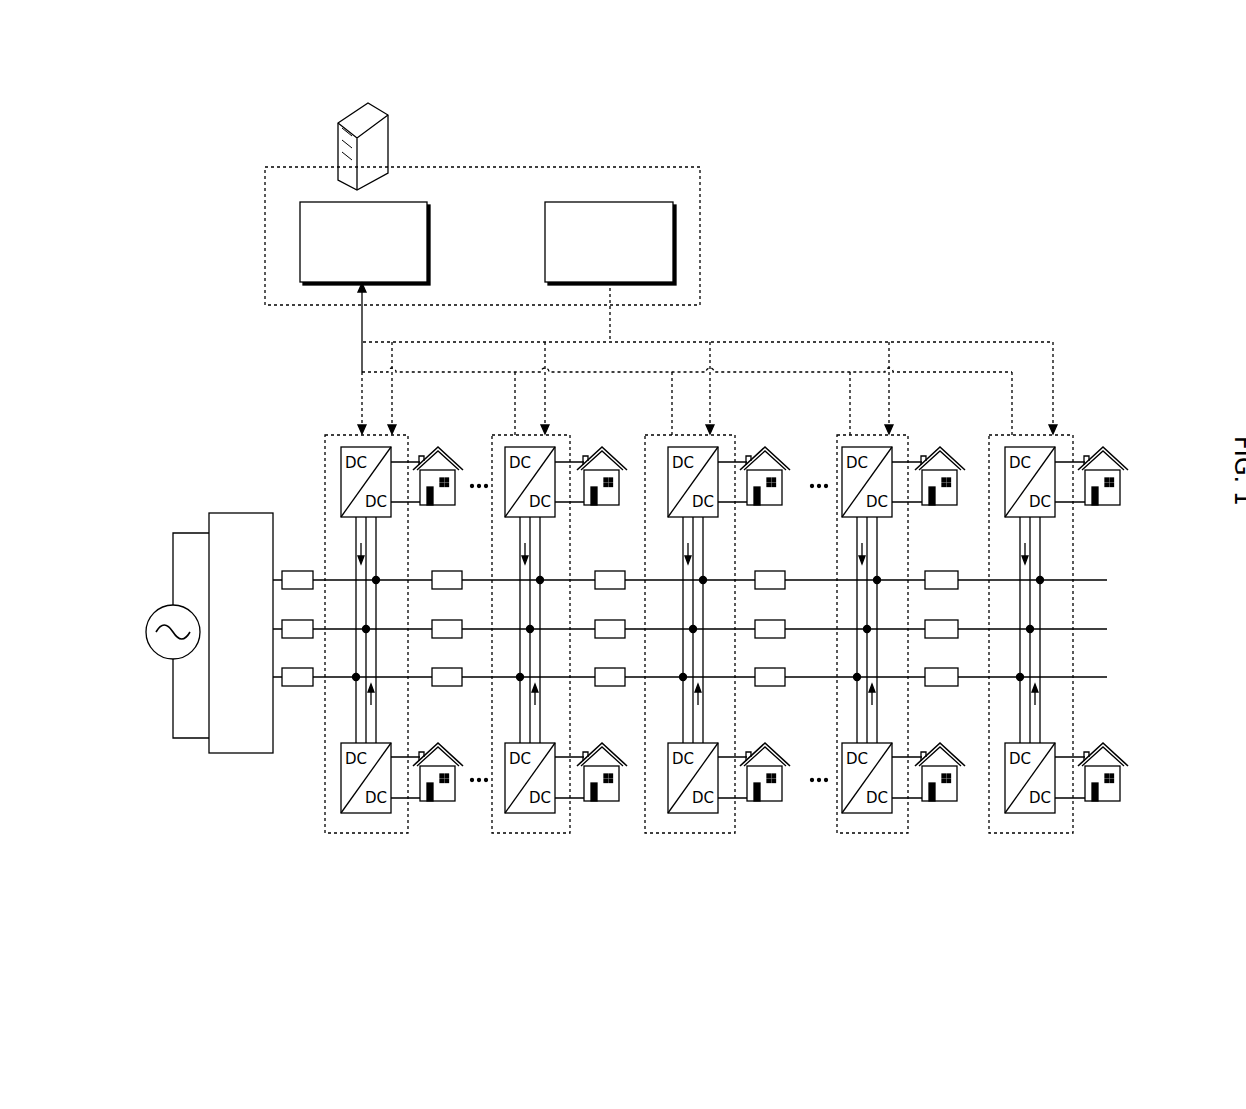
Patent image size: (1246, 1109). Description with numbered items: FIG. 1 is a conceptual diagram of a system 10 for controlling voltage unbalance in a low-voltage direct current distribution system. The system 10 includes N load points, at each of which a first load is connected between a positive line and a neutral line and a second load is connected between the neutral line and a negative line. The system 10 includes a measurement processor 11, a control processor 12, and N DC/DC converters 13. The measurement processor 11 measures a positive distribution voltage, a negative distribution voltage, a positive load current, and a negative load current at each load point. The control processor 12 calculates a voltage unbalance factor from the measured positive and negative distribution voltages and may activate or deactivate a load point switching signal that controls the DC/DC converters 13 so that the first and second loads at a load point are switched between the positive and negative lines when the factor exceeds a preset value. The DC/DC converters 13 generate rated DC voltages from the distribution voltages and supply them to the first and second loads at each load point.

The system 10 is at (760, 139).
The measurement processor 11 is at (365, 243).
The control processor 12 is at (610, 243).
The DC/DC converters 13 is at (372, 834).